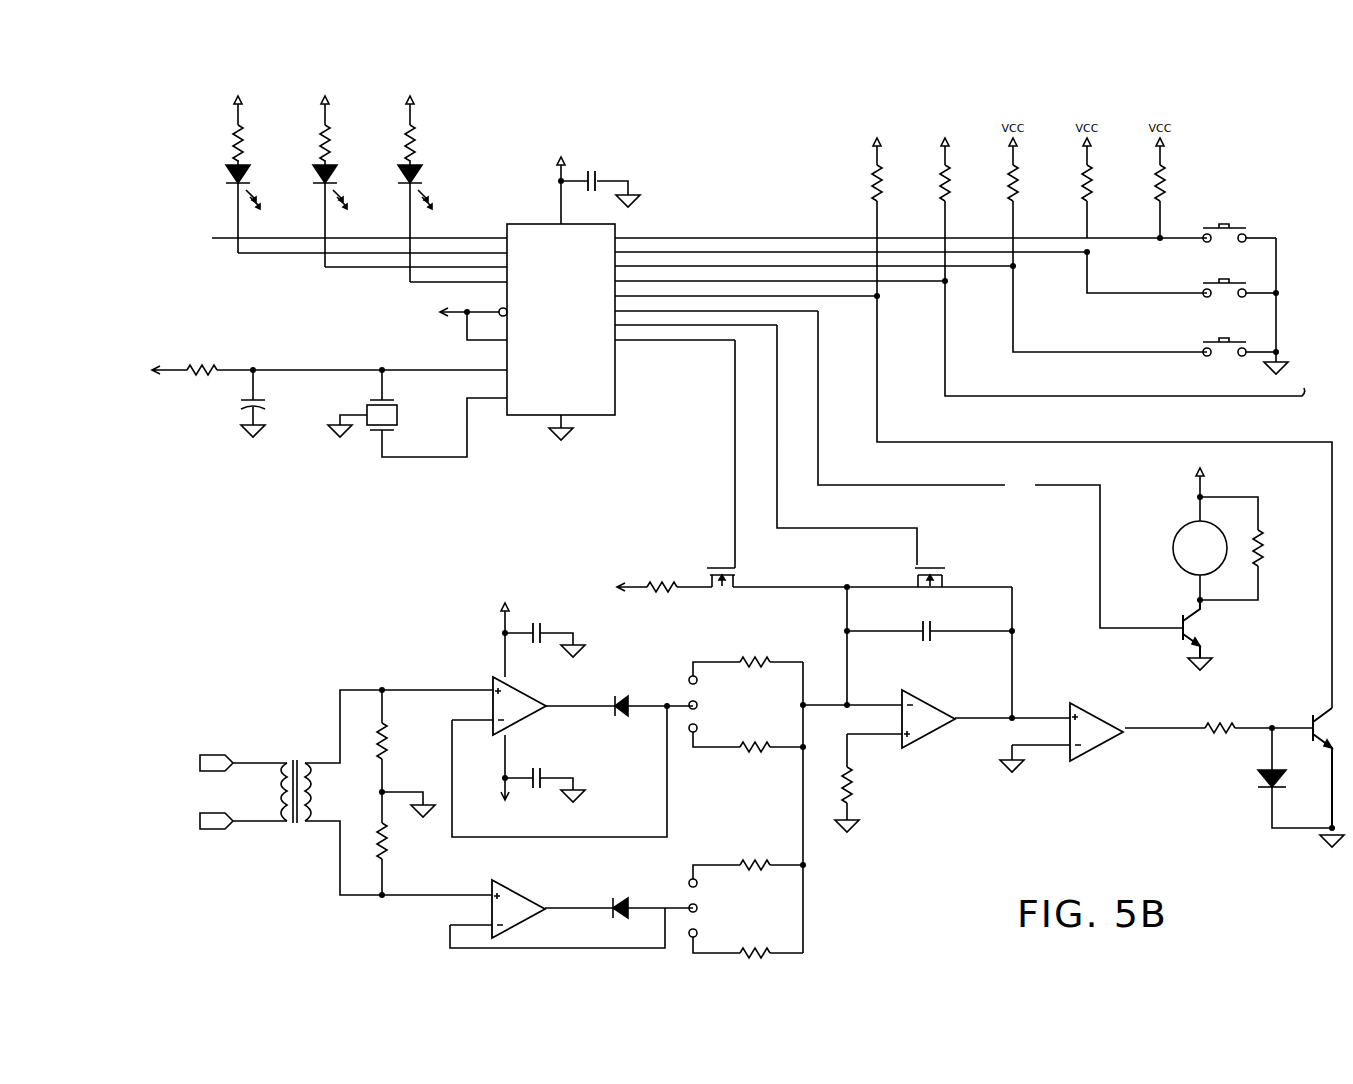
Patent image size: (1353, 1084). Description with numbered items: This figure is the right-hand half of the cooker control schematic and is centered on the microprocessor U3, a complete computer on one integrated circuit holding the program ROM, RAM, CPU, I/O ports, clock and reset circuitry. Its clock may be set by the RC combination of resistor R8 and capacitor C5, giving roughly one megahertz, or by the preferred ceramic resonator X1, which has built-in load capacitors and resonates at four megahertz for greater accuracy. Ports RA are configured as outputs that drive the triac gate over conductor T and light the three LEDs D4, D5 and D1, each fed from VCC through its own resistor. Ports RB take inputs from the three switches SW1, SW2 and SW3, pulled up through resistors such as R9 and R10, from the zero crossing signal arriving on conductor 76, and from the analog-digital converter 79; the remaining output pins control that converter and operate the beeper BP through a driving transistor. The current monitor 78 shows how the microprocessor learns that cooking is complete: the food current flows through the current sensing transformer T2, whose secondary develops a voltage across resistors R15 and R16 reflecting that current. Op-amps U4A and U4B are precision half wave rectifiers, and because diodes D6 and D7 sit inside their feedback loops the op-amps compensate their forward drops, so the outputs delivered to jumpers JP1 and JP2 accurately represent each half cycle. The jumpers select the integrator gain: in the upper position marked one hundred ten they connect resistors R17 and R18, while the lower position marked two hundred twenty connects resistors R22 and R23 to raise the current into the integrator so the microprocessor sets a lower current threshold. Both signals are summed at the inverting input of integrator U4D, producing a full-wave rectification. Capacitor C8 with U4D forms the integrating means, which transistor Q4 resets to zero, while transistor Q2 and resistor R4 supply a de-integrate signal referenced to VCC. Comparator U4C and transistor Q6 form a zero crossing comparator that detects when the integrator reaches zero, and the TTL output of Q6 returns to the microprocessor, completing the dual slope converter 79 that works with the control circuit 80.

The LED D1 is at (254, 180).
The LED D4 is at (337, 170).
The LED D5 is at (430, 166).
The conductor T is at (206, 234).
The microprocessor U3 is at (620, 382).
The resistor R9 is at (870, 195).
The resistor R10 is at (937, 193).
The switch SW1 is at (1216, 212).
The switch SW2 is at (1238, 278).
The switch SW3 is at (1227, 340).
The conductor 76 is at (1290, 398).
The resistor R8 is at (206, 360).
The capacitor C5 is at (269, 400).
The ceramic resonator X1 is at (402, 419).
The resistor R4 is at (652, 581).
The transistor Q2 is at (719, 563).
The transistor Q4 is at (938, 566).
The capacitor C8 is at (922, 646).
The beeper BP is at (1173, 558).
The current monitor 78 is at (392, 644).
The current sensing transformer T2 is at (304, 752).
The resistor R15 is at (396, 744).
The resistor R16 is at (394, 838).
The op-amp U4A is at (550, 692).
The diode D6 is at (616, 722).
The jumper JP1 is at (688, 670).
The resistor R17 is at (756, 654).
The resistor R22 is at (735, 758).
The op-amp U4B is at (514, 886).
The control circuit 80 is at (431, 922).
The diode D7 is at (635, 894).
The jumper JP2 is at (686, 876).
The resistor R18 is at (743, 860).
The resistor R23 is at (766, 944).
The integrator U4D is at (930, 748).
The comparator U4C is at (1094, 726).
The analog-digital converter 79 is at (1067, 796).
The transistor Q6 is at (1305, 722).